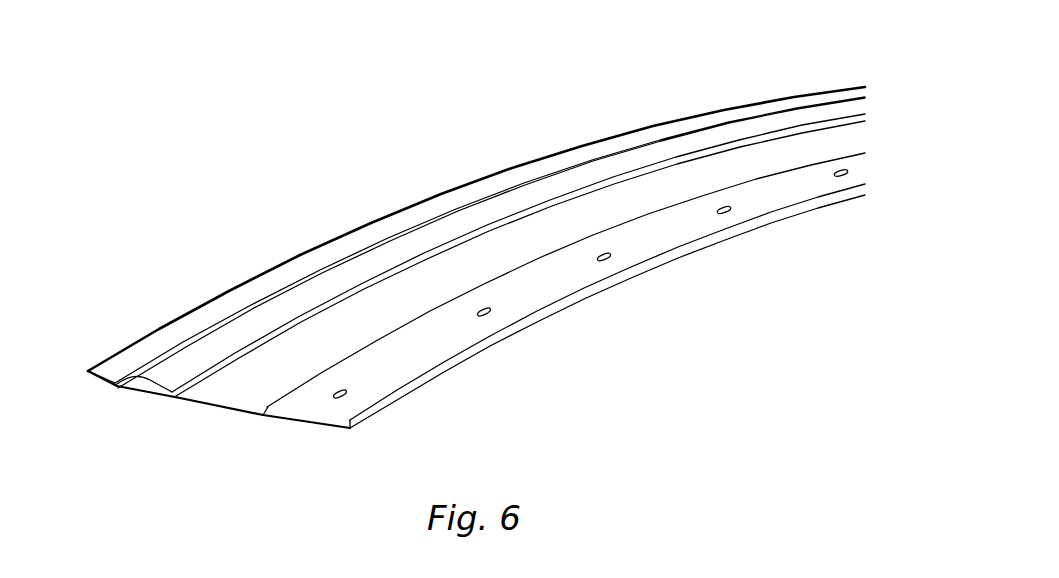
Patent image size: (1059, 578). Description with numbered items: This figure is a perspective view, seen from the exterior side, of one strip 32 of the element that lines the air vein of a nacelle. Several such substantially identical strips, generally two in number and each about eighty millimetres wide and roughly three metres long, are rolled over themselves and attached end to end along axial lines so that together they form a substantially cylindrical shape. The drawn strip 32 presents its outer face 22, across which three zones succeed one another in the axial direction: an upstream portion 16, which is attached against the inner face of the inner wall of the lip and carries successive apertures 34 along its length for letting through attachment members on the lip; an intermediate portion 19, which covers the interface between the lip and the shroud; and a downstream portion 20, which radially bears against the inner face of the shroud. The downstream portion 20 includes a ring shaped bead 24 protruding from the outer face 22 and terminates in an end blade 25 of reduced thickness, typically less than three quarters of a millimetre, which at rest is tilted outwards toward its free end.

The upstream portion 16 is at (300, 431).
The intermediate portion 19 is at (213, 412).
The downstream portion 20 is at (131, 395).
The outer face 22 is at (425, 356).
The ring shaped bead 24 is at (222, 342).
The end blade 25 is at (125, 370).
The strip 32 is at (517, 144).
The apertures 34 is at (492, 311).